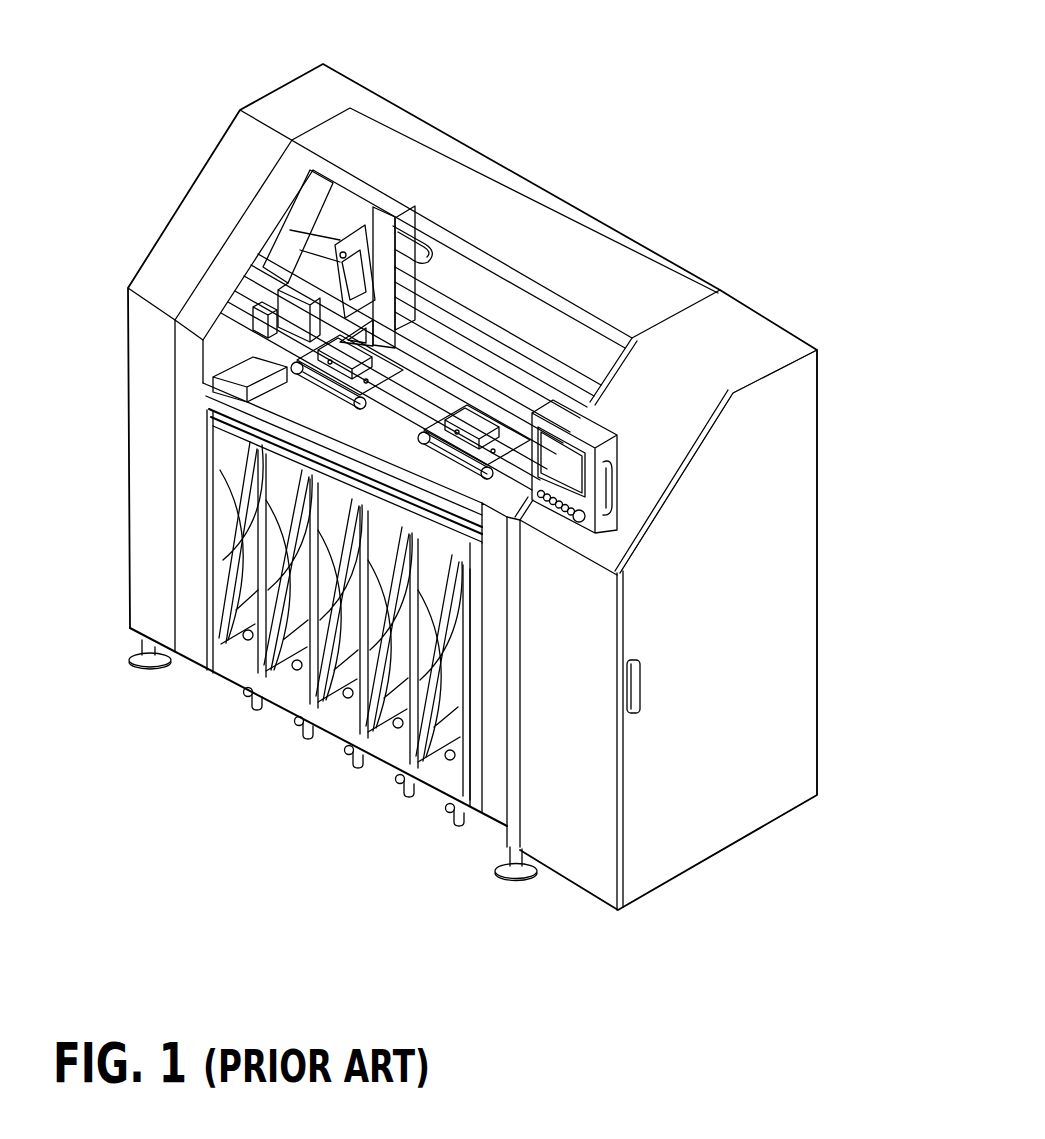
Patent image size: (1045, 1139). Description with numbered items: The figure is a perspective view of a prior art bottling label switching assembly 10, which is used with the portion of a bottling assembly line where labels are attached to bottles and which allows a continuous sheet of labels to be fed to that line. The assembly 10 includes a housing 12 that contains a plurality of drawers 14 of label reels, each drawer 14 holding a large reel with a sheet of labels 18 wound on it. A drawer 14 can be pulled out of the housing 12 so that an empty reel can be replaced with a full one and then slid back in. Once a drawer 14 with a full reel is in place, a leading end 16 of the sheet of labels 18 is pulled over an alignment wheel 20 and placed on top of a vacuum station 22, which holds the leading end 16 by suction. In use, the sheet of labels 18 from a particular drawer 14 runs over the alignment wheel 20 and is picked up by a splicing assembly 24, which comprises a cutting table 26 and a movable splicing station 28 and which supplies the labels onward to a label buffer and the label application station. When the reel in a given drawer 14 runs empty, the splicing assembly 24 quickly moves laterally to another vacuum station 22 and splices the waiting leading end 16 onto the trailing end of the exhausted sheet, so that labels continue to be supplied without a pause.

The bottling label switching assembly 10 is at (850, 313).
The housing 12 is at (819, 693).
The drawers 14 is at (226, 676).
The leading end 16 is at (533, 280).
The sheet of labels 18 is at (330, 222).
The alignment wheel 20 is at (445, 400).
The vacuum station 22 is at (405, 420).
The splicing assembly 24 is at (355, 214).
The cutting table 26 is at (300, 296).
The movable splicing station 28 is at (372, 345).